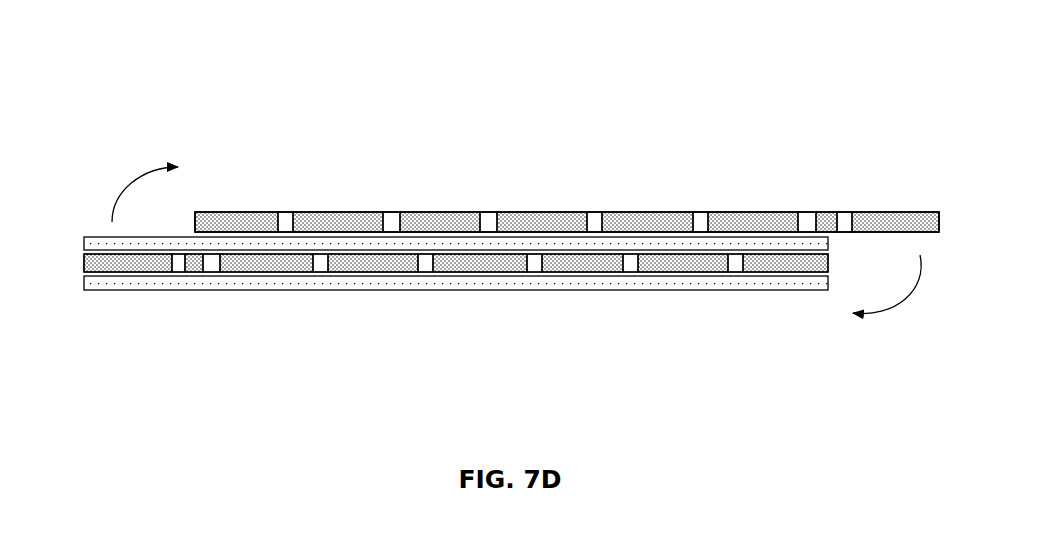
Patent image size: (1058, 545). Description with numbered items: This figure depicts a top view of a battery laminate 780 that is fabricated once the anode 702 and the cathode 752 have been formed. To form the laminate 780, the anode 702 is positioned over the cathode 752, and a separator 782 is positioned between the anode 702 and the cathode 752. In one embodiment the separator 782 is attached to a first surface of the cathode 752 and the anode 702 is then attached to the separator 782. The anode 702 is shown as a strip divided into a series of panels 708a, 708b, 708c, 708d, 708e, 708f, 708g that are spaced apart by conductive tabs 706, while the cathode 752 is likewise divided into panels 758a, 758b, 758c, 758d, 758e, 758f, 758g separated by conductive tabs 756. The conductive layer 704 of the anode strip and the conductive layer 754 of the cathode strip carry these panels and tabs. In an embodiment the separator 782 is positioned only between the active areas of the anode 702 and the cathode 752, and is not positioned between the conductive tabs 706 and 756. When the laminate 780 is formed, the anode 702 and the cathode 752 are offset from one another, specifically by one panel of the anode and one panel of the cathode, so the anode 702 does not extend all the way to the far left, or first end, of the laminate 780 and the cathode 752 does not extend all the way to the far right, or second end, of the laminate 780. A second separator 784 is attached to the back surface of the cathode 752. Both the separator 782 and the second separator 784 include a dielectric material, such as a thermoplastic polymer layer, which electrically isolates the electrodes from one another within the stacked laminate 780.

The anode 702 is at (218, 221).
The conductive layer of strip 704 is at (788, 222).
The conductive tabs 706 is at (287, 222).
The panel 708a is at (243, 222).
The panel 708b is at (338, 222).
The panel 708c is at (438, 222).
The panel 708d is at (538, 222).
The panel 708e is at (642, 222).
The panel 708f is at (749, 222).
The panel 708g is at (886, 222).
The cathode 752 is at (826, 269).
The conductive middle layer 754 is at (826, 259).
The conductive tabs 756 is at (179, 259).
The panel 758a is at (148, 262).
The panel 758b is at (282, 262).
The panel 758c is at (380, 262).
The panel 758d is at (488, 262).
The panel 758e is at (583, 262).
The panel 758f is at (683, 262).
The panel 758g is at (790, 262).
The laminate 780 is at (122, 167).
The separator 782 is at (84, 242).
The second separator 784 is at (807, 290).